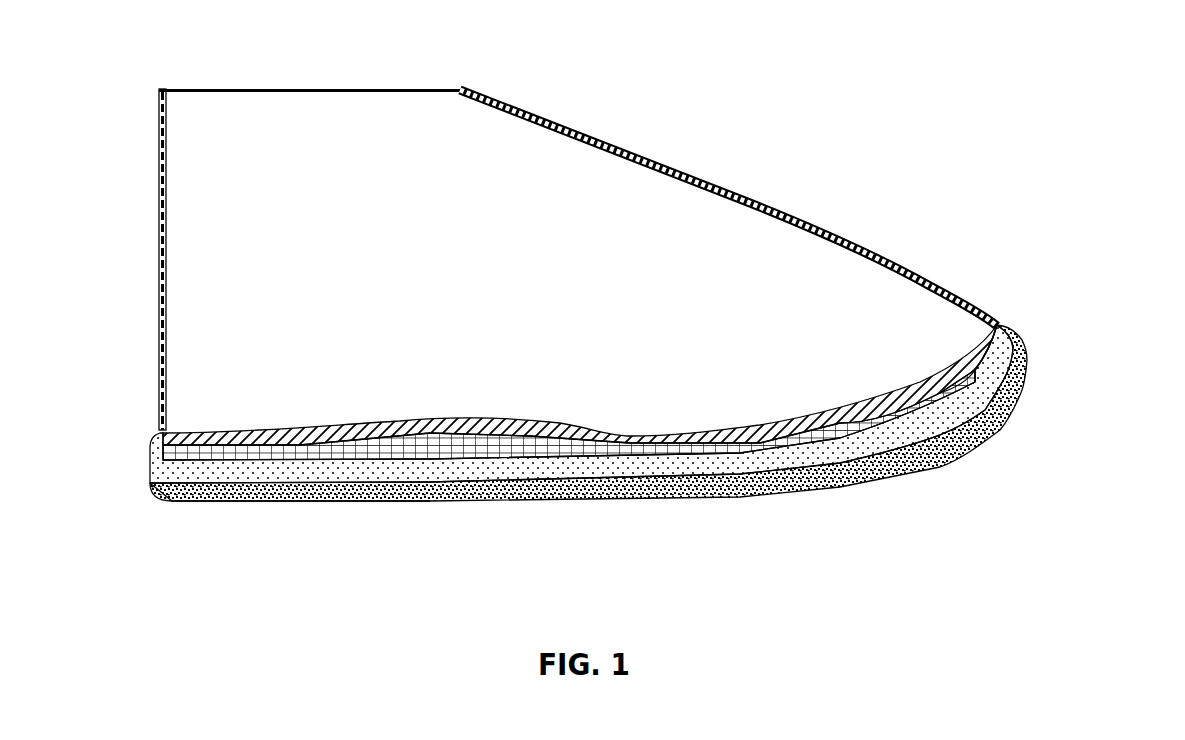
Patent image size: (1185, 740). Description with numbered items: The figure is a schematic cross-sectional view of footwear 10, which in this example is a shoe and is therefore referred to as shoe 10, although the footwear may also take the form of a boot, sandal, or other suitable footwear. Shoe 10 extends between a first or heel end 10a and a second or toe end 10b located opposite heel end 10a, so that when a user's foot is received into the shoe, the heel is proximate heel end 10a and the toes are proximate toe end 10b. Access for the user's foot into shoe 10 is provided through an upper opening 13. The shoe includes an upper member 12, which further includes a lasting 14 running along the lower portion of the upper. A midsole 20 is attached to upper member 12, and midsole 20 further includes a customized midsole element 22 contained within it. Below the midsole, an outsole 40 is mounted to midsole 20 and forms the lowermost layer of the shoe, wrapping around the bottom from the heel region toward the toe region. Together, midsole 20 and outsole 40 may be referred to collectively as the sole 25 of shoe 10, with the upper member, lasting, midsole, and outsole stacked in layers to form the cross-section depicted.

The footwear 10 is at (806, 49).
The heel end 10a is at (120, 455).
The toe end 10b is at (1055, 338).
The upper member 12 is at (557, 121).
The upper opening 13 is at (266, 80).
The lasting 14 is at (660, 430).
The midsole 20 is at (1003, 323).
The customized midsole element 22 is at (425, 458).
The sole 25 is at (183, 520).
The outsole 40 is at (998, 428).